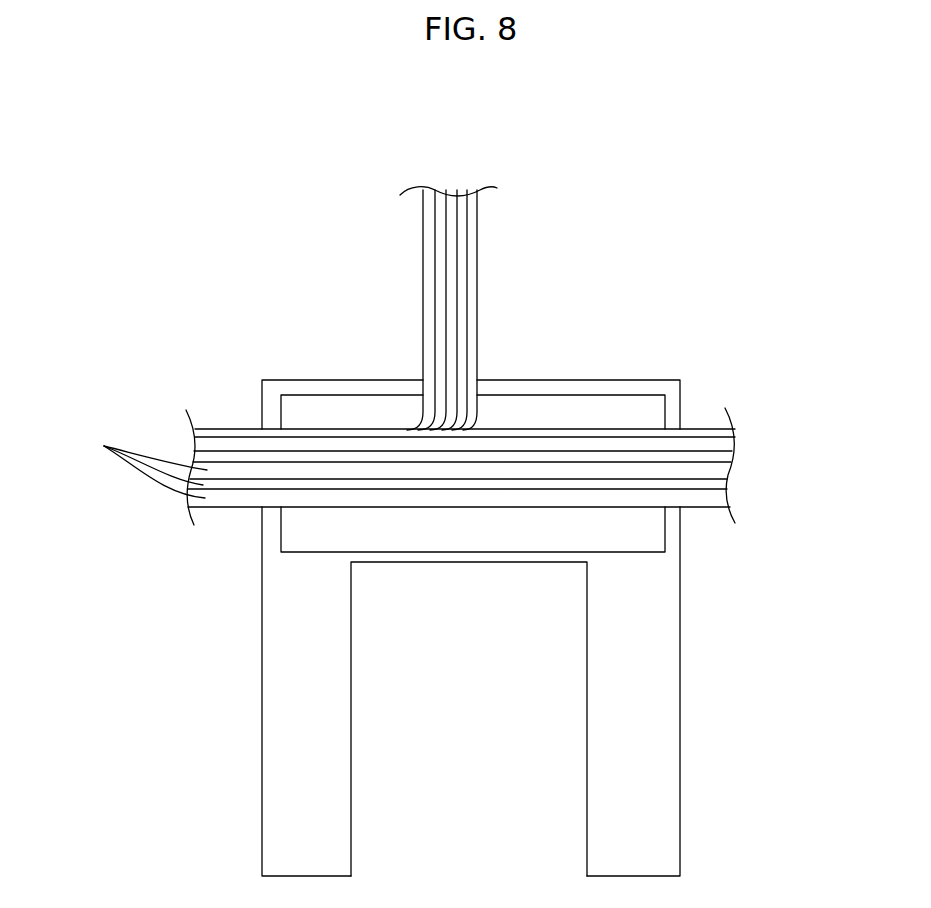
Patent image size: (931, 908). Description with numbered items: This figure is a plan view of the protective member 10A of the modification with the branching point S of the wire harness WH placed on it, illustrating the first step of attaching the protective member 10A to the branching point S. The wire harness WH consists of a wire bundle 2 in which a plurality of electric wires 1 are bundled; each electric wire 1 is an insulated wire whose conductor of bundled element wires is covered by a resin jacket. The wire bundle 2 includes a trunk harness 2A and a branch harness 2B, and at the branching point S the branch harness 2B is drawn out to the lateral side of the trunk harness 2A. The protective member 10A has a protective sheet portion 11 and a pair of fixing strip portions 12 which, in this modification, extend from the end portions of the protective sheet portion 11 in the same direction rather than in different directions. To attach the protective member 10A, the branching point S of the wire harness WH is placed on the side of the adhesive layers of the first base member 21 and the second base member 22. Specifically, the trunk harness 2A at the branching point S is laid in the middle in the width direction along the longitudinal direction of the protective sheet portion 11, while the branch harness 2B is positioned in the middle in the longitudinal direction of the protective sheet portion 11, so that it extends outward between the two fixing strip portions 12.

The electric wire 1 is at (145, 466).
The wire bundle 2 is at (216, 421).
The trunk harness 2A is at (402, 508).
The branch harness 2B is at (423, 283).
The protective member 10A is at (299, 368).
The protective sheet portion 11 is at (595, 380).
The fixing strip portion 12 is at (262, 798).
The first base member 21 is at (653, 615).
The second base member 22 is at (625, 410).
The branching point S is at (524, 352).
The wire harness WH is at (224, 516).